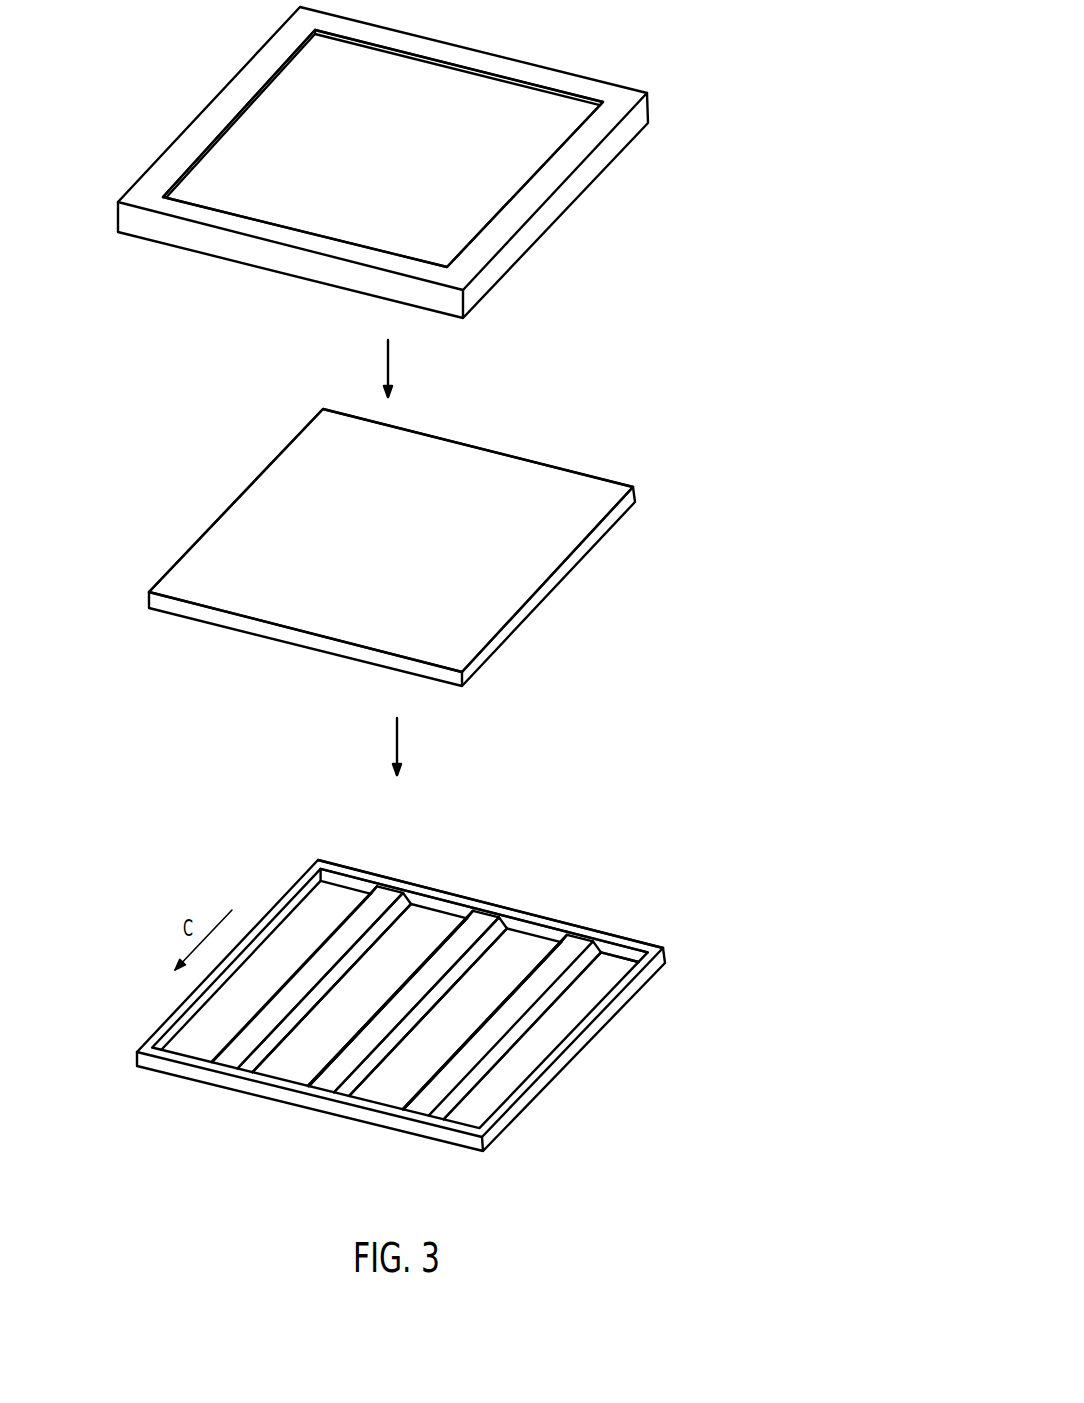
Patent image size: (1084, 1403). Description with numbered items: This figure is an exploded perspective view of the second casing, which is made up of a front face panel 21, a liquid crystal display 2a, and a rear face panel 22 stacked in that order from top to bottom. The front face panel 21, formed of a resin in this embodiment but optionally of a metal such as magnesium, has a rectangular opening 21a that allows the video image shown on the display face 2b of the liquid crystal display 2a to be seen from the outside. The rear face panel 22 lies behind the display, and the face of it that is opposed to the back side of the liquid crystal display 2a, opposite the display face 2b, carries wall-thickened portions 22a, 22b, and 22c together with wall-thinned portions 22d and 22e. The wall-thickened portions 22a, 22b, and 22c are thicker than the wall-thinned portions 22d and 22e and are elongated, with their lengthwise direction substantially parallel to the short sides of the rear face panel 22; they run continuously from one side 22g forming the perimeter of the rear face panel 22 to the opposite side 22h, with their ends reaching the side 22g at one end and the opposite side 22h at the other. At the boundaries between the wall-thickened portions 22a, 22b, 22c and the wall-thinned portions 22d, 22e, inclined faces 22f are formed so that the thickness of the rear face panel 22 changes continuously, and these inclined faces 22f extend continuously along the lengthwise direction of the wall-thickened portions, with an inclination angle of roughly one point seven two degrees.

The front face panel 21 is at (580, 83).
The opening 21a is at (510, 165).
The liquid crystal display 2a is at (580, 482).
The display face 2b is at (450, 512).
The rear face panel 22 is at (665, 950).
The wall-thickened portion 22a is at (230, 1062).
The wall-thickened portion 22b is at (322, 1090).
The wall-thickened portion 22c is at (420, 1112).
The wall-thinned portion 22d is at (278, 1076).
The wall-thinned portion 22e is at (372, 1100).
The inclined face 22f is at (383, 927).
The side 22g is at (585, 928).
The opposite side 22h is at (470, 1130).